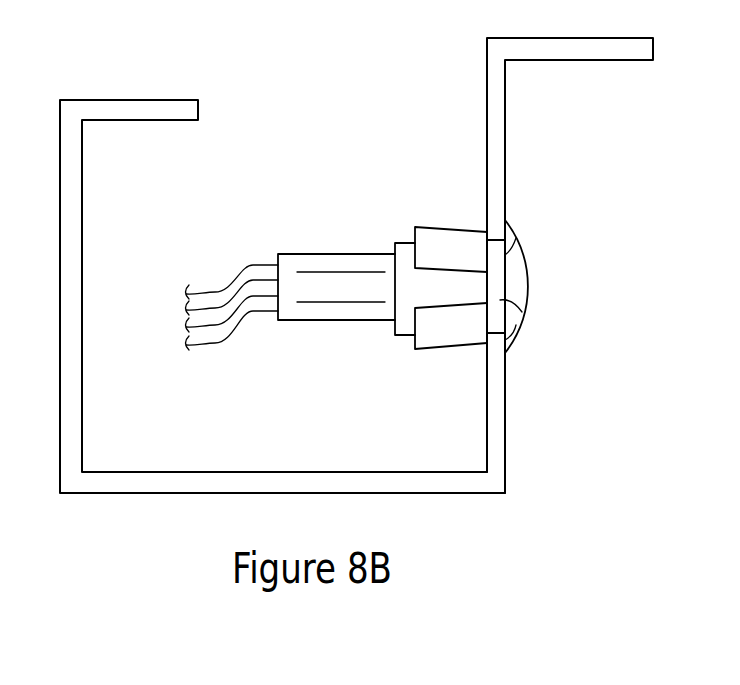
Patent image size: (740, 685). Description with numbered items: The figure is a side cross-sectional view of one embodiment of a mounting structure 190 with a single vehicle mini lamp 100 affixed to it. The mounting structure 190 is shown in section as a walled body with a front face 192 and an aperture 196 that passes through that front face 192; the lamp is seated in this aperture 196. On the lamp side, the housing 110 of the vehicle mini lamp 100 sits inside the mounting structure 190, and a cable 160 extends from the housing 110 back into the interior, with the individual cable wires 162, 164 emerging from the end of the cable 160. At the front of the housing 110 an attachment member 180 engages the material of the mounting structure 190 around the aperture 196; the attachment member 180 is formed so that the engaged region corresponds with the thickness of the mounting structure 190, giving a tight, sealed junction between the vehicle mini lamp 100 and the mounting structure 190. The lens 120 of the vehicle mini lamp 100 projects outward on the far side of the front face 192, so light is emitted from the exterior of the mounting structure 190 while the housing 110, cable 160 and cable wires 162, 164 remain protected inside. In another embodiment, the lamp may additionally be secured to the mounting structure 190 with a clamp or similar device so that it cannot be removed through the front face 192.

The vehicle mini lamp 100 is at (288, 174).
The housing 110 is at (408, 333).
The lens 120 is at (529, 276).
The cable 160 is at (324, 316).
The cable wire 162 is at (218, 292).
The cable wire 164 is at (216, 330).
The attachment member 180 is at (437, 240).
The mounting structure 190 is at (176, 110).
The front face 192 is at (507, 110).
The aperture 196 is at (500, 300).